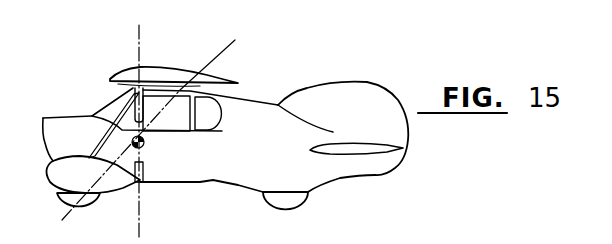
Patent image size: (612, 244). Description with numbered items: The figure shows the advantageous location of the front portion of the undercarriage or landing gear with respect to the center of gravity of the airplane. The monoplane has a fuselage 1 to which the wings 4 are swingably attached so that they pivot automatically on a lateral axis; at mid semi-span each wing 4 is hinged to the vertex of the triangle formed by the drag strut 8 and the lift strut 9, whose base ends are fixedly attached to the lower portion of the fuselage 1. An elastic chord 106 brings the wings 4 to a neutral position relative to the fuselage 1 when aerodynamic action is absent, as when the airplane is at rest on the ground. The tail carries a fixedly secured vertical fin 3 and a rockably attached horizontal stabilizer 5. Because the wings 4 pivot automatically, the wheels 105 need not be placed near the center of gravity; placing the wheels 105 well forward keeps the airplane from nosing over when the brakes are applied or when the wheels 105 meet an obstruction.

The fuselage 1 is at (251, 98).
The vertical fin 3 is at (383, 100).
The wing 4 is at (167, 69).
The horizontal stabilizer 5 is at (353, 147).
The drag strut 8 is at (93, 147).
The lift strut 9 is at (143, 170).
The wheels 105 is at (299, 199).
The elastic chord 106 is at (80, 212).